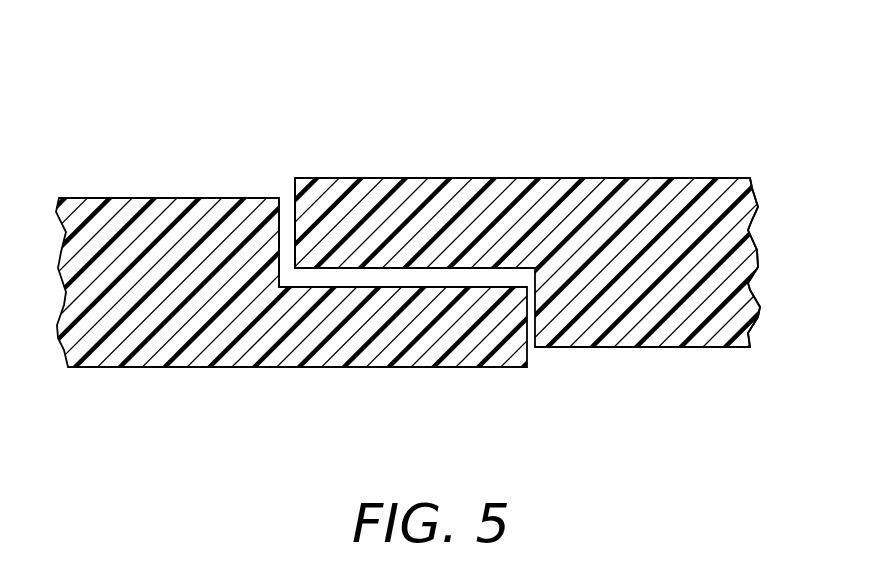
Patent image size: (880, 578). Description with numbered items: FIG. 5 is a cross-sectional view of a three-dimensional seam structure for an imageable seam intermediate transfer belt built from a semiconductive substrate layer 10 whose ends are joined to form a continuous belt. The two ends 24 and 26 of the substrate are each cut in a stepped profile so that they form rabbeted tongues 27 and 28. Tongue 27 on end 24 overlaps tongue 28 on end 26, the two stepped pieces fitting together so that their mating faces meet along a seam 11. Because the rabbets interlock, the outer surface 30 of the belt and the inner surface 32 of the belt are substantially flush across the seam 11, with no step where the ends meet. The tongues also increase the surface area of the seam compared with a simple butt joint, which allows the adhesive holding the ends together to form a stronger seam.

The semiconductive substrate layer 10 is at (440, 247).
The seam 11 is at (287, 193).
The end 24 is at (348, 145).
The end 26 is at (478, 372).
The rabbeted tongue 27 is at (415, 178).
The rabbeted tongue 28 is at (352, 367).
The outer surface 30 is at (703, 178).
The inner surface 32 is at (705, 348).